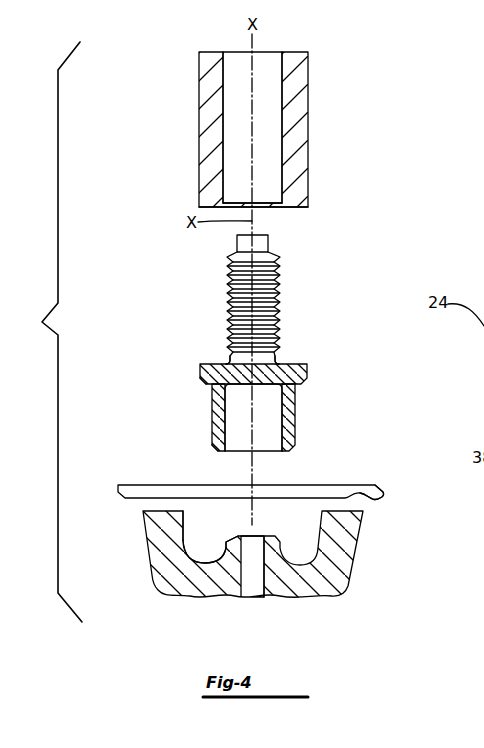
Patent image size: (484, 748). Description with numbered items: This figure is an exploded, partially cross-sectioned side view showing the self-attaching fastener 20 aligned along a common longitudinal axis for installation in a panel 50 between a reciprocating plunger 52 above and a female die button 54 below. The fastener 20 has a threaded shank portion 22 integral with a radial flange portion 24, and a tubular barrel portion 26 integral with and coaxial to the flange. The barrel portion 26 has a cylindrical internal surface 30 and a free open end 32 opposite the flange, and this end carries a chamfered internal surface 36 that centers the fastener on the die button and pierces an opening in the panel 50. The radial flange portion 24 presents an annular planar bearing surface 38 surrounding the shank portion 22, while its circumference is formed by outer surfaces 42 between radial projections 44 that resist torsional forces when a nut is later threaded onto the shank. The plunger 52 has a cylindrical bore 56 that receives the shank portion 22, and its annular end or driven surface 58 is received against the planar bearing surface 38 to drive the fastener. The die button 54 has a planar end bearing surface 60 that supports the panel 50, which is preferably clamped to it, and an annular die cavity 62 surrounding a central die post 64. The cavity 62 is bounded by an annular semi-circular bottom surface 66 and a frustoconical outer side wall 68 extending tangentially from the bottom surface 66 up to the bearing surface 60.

The self-attaching fastener 20 is at (258, 355).
The shank portion 22 is at (262, 281).
The radial flange portion 24 is at (201, 372).
The tubular barrel portion 26 is at (292, 405).
The cylindrical internal surface 30 is at (228, 420).
The free open end 32 is at (213, 450).
The chamfered internal surface 36 is at (238, 452).
The annular planar bearing surface 38 is at (290, 362).
The outer surfaces of the radial flange portion 42 is at (200, 379).
The radial projections 44 is at (483, 366).
The panel 50 is at (297, 490).
The reciprocating plunger 52 is at (300, 105).
The die button 54 is at (340, 560).
The cylindrical bore 56 is at (282, 125).
The annular end or driven surface 58 is at (292, 207).
The planar end bearing surface 60 is at (384, 498).
The annular die cavity 62 is at (198, 548).
The central die post 64 is at (273, 547).
The annular semi-circular bottom surface 66 is at (202, 556).
The frustoconical outer side wall 68 is at (190, 525).